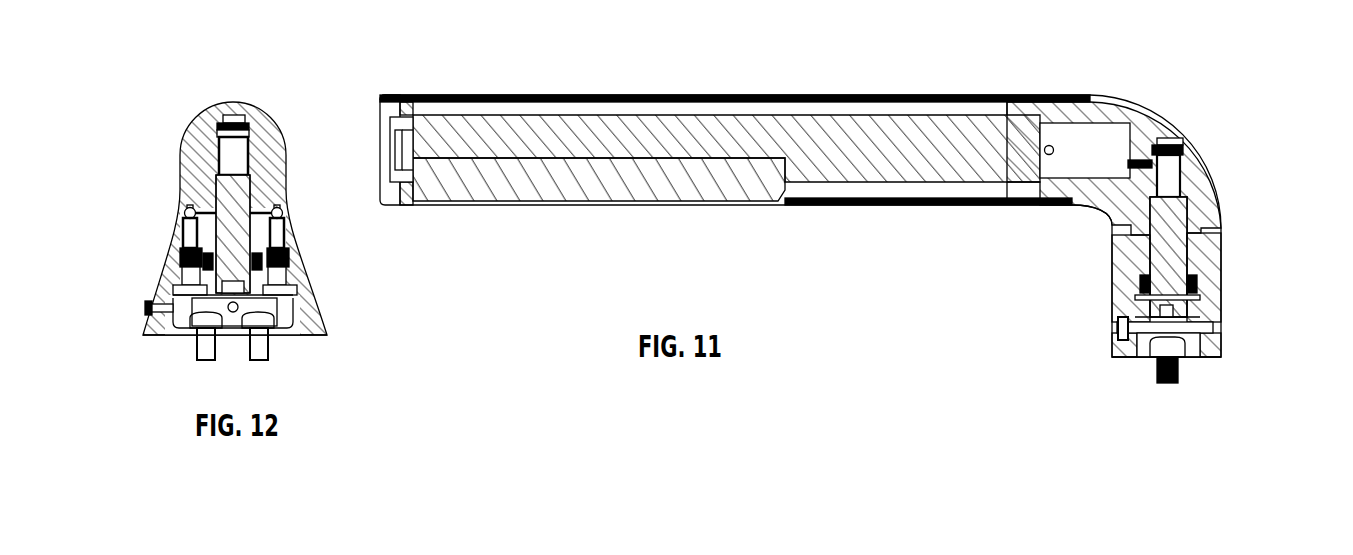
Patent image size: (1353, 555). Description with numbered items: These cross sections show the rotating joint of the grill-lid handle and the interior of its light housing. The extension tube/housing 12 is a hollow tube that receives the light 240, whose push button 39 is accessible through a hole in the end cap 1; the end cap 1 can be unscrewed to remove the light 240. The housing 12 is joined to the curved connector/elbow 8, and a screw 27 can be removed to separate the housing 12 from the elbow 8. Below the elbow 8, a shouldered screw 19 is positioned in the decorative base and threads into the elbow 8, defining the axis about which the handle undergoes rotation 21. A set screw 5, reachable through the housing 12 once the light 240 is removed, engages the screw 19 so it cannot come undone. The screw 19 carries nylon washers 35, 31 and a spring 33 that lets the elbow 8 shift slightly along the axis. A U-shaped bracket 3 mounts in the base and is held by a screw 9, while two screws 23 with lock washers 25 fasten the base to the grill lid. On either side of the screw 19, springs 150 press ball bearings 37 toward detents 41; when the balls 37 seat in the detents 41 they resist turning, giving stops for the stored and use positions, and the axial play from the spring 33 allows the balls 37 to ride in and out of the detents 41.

In FIG. 11, the end cap 1 is at (393, 95).
In FIG. 11, the extension tube/housing 12 is at (532, 93).
In FIG. 11, the screw 27 is at (1054, 146).
In FIG. 11, the set screw 5 is at (1168, 140).
In FIG. 11, the button 39 is at (396, 146).
In FIG. 11, the light 240 is at (535, 162).
In FIG. 11, the curved connector/elbow 8 is at (1078, 205).
In FIG. 11, the screw 19 is at (1137, 302).
In FIG. 11, the screw 9 is at (1115, 333).
In FIG. 11, the bracket 3 is at (1142, 360).
In FIG. 11, the washer 31 is at (1200, 278).
In FIG. 11, the spring 33 is at (1200, 293).
In FIG. 11, the washer 35 is at (1222, 320).
In FIG. 11, the lock washer 25 is at (1195, 360).
In FIG. 11, the screw 23 is at (1180, 382).
In FIG. 12, the detent 41 is at (182, 203).
In FIG. 12, the ball bearing 37 is at (287, 213).
In FIG. 12, the spring 150 is at (285, 237).
In FIG. 12, the rotation 21 is at (152, 307).